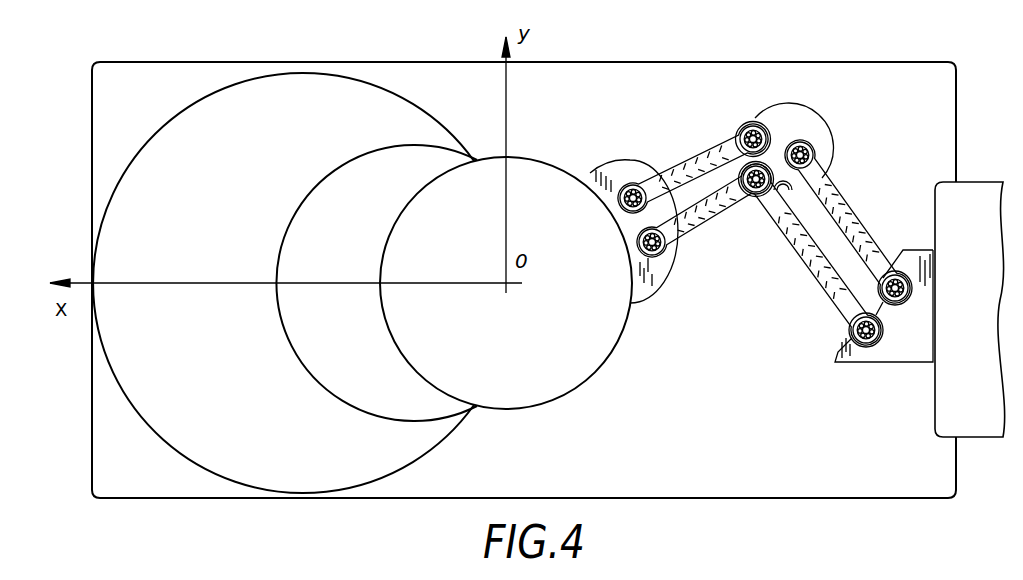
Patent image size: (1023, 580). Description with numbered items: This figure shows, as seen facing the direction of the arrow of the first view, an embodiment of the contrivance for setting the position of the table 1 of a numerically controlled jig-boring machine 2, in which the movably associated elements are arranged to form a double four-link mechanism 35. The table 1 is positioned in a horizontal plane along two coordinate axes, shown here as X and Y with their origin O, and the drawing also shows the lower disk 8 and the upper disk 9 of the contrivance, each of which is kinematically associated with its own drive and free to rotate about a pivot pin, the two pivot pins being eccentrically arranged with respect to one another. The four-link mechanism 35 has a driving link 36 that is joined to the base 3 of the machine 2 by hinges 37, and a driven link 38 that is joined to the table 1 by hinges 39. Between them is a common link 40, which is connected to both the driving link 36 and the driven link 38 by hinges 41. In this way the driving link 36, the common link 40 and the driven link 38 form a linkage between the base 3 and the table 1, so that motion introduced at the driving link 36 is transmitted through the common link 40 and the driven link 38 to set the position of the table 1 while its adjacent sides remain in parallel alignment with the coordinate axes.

The table 1 is at (528, 168).
The numerically controlled jig-boring machine 2 is at (780, 488).
The base 3 is at (970, 188).
The lower disk 8 is at (163, 138).
The upper disk 9 is at (375, 153).
The double four-link mechanism 35 is at (933, 97).
The driving link 36 is at (832, 202).
The hinges 37 is at (900, 316).
The driven link 38 is at (700, 213).
The hinges 39 is at (633, 185).
The common link 40 is at (802, 130).
The hinges 41 is at (743, 126).